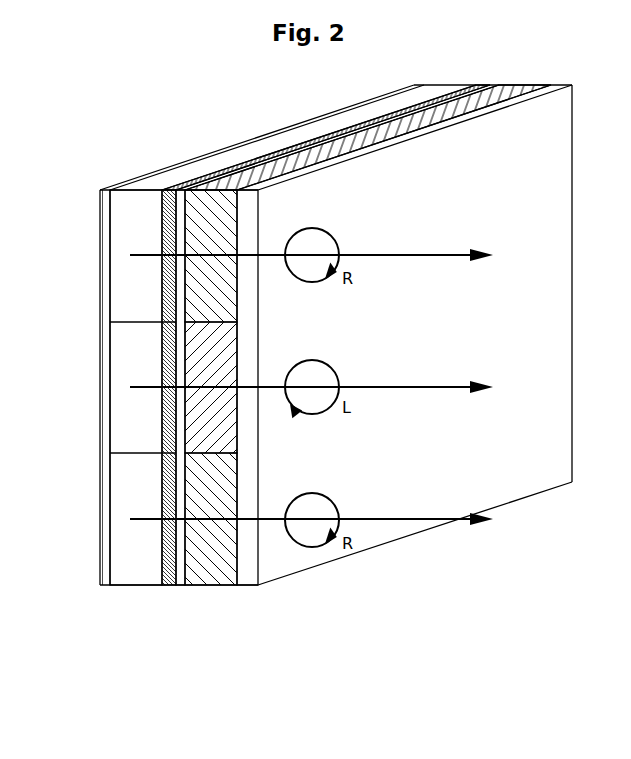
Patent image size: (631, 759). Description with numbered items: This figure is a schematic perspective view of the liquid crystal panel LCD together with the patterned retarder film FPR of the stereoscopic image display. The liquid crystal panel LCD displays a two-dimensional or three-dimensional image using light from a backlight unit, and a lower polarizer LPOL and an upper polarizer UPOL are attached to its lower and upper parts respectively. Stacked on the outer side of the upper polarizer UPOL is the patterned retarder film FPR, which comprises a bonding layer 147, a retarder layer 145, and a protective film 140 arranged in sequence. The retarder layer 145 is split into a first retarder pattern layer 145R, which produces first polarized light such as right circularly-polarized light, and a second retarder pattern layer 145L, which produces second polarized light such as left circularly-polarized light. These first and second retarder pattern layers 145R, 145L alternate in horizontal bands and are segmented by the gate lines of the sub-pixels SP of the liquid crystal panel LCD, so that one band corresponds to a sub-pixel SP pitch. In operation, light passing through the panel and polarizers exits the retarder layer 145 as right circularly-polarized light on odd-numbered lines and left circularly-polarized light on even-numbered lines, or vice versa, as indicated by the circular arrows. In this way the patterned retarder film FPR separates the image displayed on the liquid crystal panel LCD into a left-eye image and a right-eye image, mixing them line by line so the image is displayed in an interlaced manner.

The bonding layer 147 is at (178, 590).
The retarder layer 145 is at (290, 363).
The first retarder pattern layer 145R is at (185, 318).
The second retarder pattern layer 145L is at (187, 416).
The protective film 140 is at (404, 363).
The lower polarizer LPOL is at (122, 182).
The liquid crystal panel LCD is at (152, 183).
The upper polarizer UPOL is at (192, 185).
The patterned retarder film FPR is at (301, 382).
The sub-pixel SP is at (94, 190).